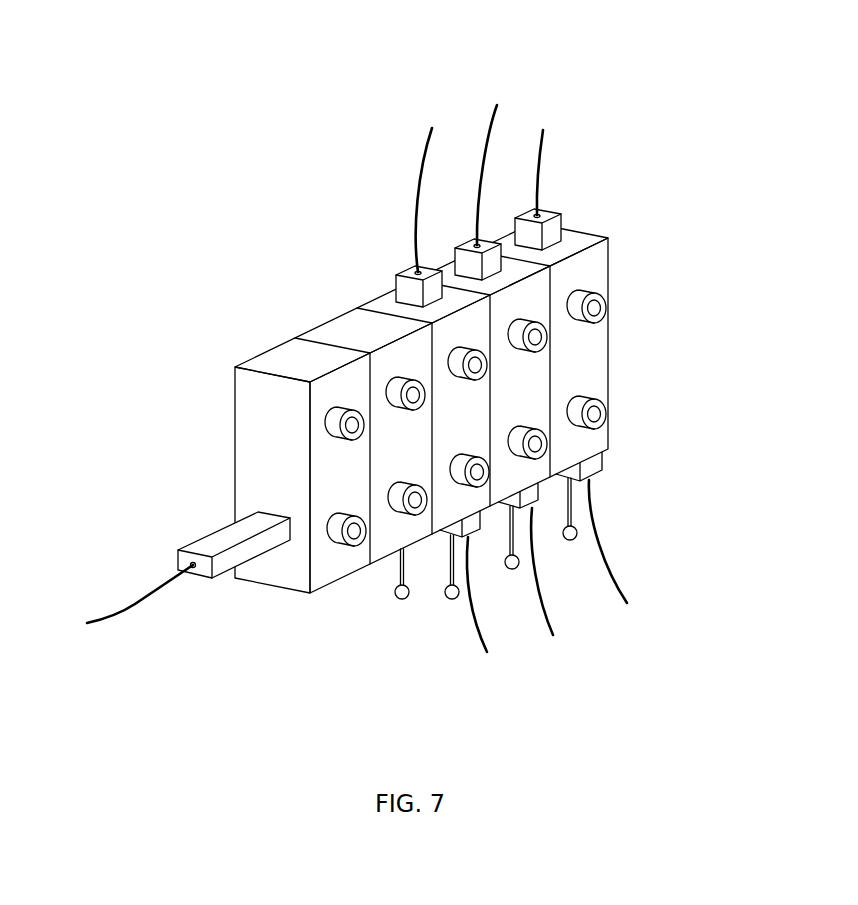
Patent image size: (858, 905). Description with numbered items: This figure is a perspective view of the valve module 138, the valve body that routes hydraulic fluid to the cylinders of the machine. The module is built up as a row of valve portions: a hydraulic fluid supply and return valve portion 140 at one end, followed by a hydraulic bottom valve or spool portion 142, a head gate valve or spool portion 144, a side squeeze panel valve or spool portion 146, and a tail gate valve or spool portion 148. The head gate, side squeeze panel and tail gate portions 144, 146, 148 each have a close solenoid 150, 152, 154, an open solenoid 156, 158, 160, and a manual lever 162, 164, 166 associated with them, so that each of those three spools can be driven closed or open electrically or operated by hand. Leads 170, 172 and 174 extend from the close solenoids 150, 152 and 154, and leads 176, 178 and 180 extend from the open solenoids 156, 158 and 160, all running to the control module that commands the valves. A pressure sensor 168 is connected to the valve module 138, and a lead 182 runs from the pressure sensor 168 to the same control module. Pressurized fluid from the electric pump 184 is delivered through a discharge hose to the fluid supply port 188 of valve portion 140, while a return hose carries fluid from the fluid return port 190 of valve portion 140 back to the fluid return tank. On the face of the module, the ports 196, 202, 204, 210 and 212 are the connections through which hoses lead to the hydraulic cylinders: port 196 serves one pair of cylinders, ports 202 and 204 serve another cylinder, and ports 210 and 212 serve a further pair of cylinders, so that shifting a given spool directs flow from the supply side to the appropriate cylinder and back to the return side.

The valve module 138 is at (294, 207).
The hydraulic fluid supply and return valve portion 140 is at (320, 393).
The hydraulic bottom valve or spool portion 142 is at (378, 363).
The head gate valve or spool portion 144 is at (443, 337).
The side squeeze panel valve or spool portion 146 is at (597, 257).
The tail gate valve or spool portion 148 is at (598, 232).
The close solenoid 150 is at (407, 283).
The close solenoid 152 is at (494, 252).
The close solenoid 154 is at (553, 228).
The open solenoid 156 is at (478, 533).
The open solenoid 158 is at (543, 520).
The open solenoid 160 is at (603, 468).
The manual lever 162 is at (447, 598).
The manual lever 164 is at (515, 571).
The manual lever 166 is at (572, 541).
The pressure sensor 168 is at (217, 538).
The lead 170 is at (420, 176).
The lead 172 is at (488, 140).
The lead 174 is at (547, 140).
The lead 176 is at (474, 620).
The lead 178 is at (555, 630).
The lead 180 is at (599, 541).
The lead 182 is at (133, 608).
The electric pump 184 is at (610, 357).
The fluid supply port 188 is at (330, 420).
The fluid return port 190 is at (350, 548).
The port 196 is at (548, 462).
The port 202 is at (549, 338).
The port 204 is at (549, 443).
The port 210 is at (609, 306).
The port 212 is at (607, 413).